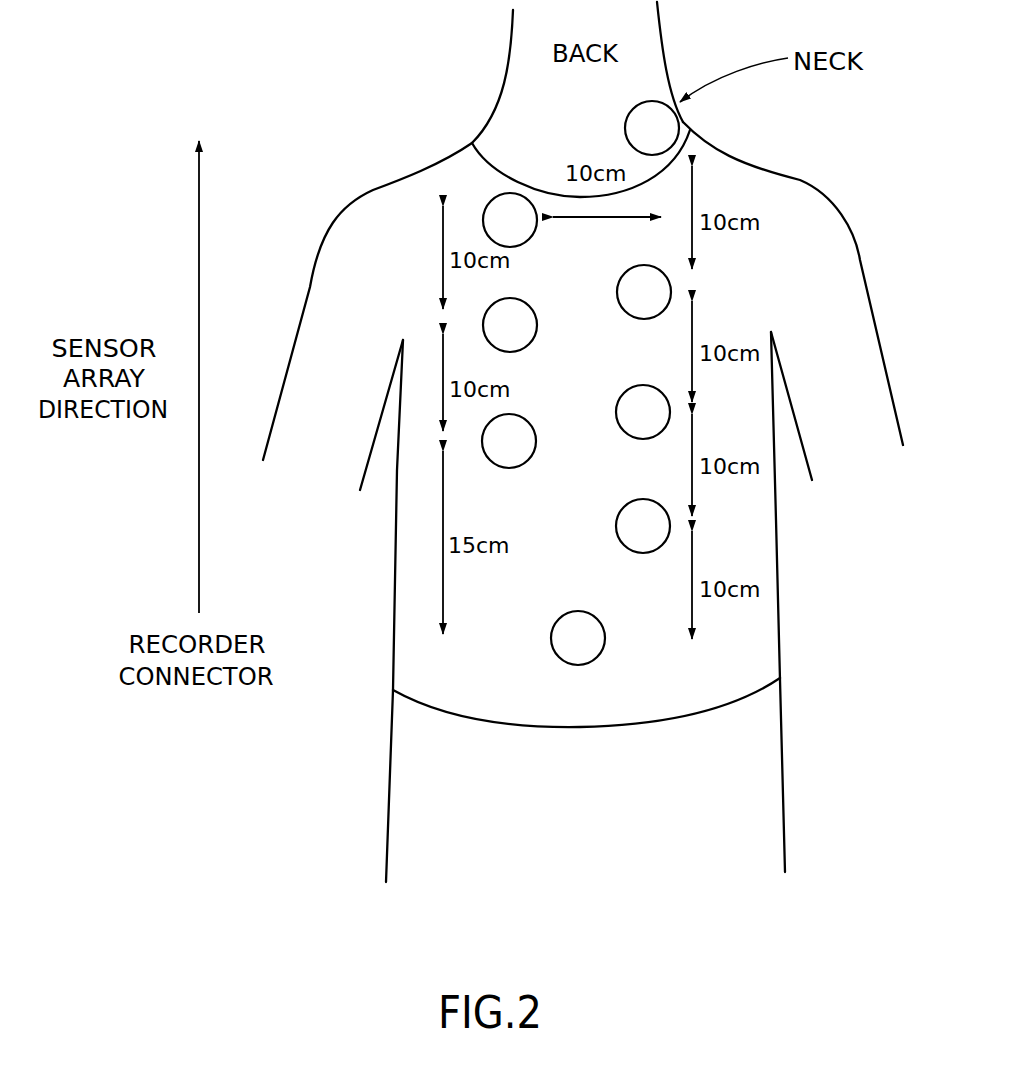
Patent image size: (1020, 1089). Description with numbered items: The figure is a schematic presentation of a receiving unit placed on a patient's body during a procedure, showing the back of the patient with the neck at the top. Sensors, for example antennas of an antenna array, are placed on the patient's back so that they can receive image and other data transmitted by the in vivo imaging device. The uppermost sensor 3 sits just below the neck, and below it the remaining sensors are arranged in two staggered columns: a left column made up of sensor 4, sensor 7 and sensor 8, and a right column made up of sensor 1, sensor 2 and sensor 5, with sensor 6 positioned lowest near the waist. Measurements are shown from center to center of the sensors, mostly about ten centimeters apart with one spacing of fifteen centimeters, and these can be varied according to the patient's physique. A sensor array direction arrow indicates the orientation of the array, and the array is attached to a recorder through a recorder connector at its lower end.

The sensor 1 is at (644, 292).
The sensor 2 is at (643, 412).
The sensor 3 is at (652, 128).
The sensor 4 is at (510, 220).
The sensor 5 is at (643, 526).
The sensor 6 is at (578, 638).
The sensor 7 is at (510, 325).
The sensor 8 is at (509, 441).